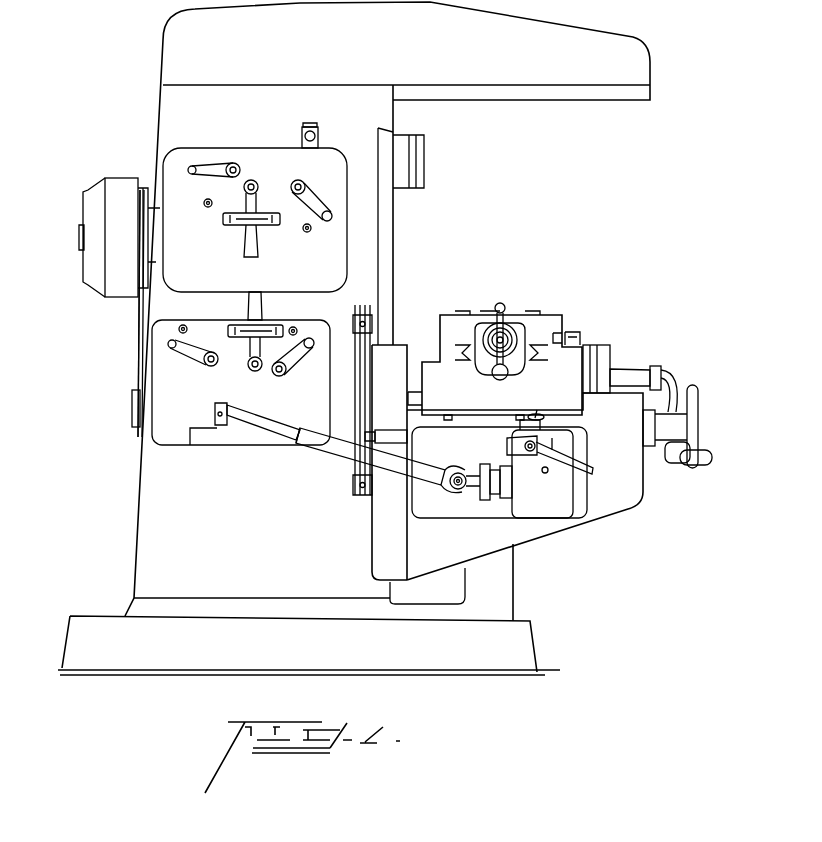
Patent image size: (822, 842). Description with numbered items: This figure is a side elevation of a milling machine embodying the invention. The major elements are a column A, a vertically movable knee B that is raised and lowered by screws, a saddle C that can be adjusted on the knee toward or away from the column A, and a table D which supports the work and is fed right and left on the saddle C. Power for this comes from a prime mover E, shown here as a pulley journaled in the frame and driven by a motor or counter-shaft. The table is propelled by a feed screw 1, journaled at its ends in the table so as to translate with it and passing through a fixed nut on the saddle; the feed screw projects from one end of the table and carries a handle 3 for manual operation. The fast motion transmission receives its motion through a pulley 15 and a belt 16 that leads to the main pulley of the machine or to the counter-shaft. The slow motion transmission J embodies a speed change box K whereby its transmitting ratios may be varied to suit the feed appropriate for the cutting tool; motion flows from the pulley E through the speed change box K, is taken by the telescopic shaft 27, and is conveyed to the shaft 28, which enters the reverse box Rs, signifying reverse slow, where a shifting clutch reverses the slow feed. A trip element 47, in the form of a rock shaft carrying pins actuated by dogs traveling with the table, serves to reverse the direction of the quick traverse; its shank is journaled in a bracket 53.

The column A is at (354, 338).
The knee B is at (504, 462).
The saddle C is at (495, 365).
The table D is at (495, 349).
The prime mover E is at (119, 307).
The speed change box K is at (241, 382).
The slow motion transmission J is at (320, 426).
The reverse box Rs is at (550, 464).
The feed screw 1 is at (506, 330).
The handle 3 is at (498, 297).
The pulley 15 is at (133, 384).
The belt 16 is at (138, 325).
The telescopic shaft 27 is at (285, 432).
The shaft 28 is at (501, 497).
The trip element 47 is at (600, 348).
The bracket 53 is at (612, 362).